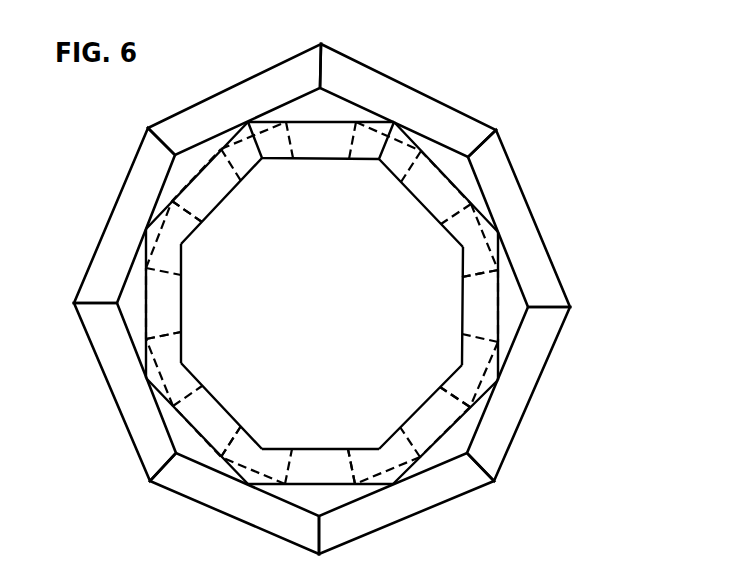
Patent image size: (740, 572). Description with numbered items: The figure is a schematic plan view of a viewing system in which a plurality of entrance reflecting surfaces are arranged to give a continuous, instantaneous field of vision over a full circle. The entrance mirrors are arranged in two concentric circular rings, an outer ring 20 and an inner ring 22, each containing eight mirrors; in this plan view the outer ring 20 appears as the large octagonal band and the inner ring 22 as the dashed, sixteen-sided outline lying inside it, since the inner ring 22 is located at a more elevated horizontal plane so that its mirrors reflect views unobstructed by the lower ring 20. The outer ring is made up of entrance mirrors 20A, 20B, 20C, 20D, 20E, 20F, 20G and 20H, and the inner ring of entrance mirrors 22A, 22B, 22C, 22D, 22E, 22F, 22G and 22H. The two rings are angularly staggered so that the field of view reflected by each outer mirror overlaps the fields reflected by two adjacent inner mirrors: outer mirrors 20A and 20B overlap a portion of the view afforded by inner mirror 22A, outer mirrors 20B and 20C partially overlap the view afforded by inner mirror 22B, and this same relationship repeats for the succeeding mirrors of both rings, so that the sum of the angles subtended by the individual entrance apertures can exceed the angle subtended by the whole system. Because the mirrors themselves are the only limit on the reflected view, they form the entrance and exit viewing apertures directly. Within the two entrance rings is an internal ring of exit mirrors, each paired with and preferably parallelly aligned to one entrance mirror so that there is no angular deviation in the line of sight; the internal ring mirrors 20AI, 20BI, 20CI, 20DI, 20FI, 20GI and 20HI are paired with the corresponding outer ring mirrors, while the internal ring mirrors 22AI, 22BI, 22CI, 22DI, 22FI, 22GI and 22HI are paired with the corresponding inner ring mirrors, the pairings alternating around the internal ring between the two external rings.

The outer ring of entrance mirrors 20 is at (482, 107).
The outer ring mirror 20A is at (447, 503).
The outer ring mirror 20B is at (268, 536).
The outer ring mirror 20C is at (128, 433).
The outer ring mirror 20D is at (85, 260).
The outer ring mirror 20E is at (210, 98).
The outer ring mirror 20F is at (395, 78).
The outer ring mirror 20G is at (517, 170).
The outer ring mirror 20H is at (553, 349).
The internal ring mirror 20AI is at (375, 436).
The internal ring mirror 20BI is at (267, 438).
The internal ring mirror 20CI is at (193, 366).
The internal ring mirror 20DI is at (193, 250).
The internal ring mirror 20FI is at (320, 162).
The internal ring mirror 20GI is at (453, 260).
The internal ring mirror 20HI is at (448, 361).
The inner ring of entrance mirrors 22 is at (176, 424).
The inner ring mirror 22A is at (356, 489).
The inner ring mirror 22B is at (222, 460).
The inner ring mirror 22C is at (147, 348).
The inner ring mirror 22D is at (172, 201).
The inner ring mirror 22E is at (286, 120).
The inner ring mirror 22F is at (421, 152).
The inner ring mirror 22G is at (496, 258).
The inner ring mirror 22H is at (485, 404).
The internal ring mirror 22AI is at (307, 449).
The internal ring mirror 22BI is at (233, 401).
The internal ring mirror 22CI is at (181, 305).
The internal ring mirror 22DI is at (212, 207).
The internal ring mirror 22FI is at (279, 167).
The internal ring mirror 22GI is at (461, 305).
The internal ring mirror 22HI is at (421, 404).